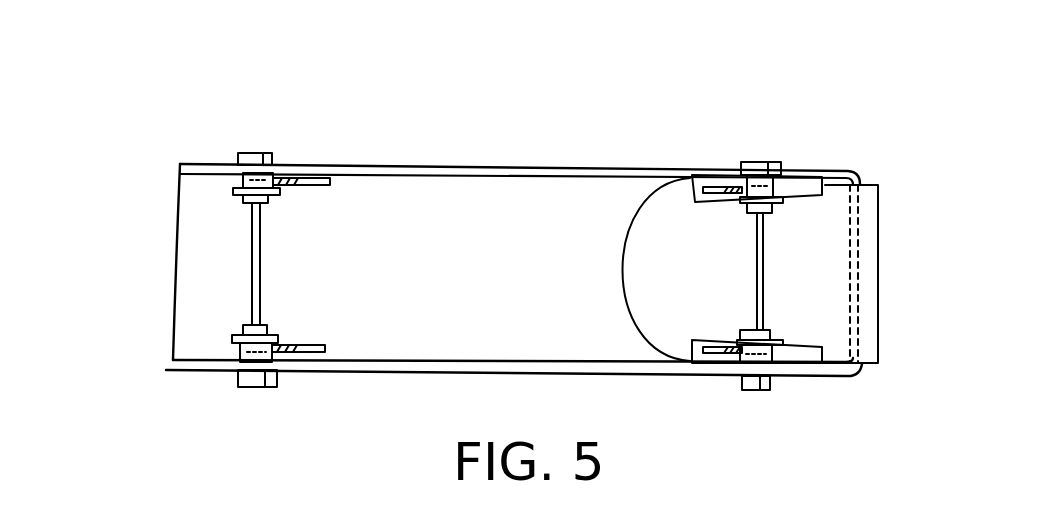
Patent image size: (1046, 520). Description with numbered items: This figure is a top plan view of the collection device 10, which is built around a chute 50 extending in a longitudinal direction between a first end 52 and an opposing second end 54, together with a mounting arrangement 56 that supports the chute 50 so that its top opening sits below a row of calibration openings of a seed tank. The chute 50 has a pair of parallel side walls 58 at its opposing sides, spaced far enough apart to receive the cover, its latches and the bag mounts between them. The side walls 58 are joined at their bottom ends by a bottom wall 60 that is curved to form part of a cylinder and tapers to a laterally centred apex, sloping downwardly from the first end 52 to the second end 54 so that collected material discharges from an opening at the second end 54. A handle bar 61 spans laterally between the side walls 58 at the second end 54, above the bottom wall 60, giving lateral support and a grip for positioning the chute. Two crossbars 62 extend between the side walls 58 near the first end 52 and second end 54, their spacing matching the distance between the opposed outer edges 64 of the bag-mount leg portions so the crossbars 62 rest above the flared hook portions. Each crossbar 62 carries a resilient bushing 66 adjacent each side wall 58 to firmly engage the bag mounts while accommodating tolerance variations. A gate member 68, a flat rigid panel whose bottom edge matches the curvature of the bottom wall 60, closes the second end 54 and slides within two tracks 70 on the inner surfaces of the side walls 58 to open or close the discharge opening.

The collection device 10 is at (86, 73).
The chute 50 is at (518, 130).
The first end 52 is at (175, 296).
The second end 54 is at (849, 162).
The mounting arrangement 56 is at (218, 340).
The side walls 58 is at (410, 170).
The bottom wall 60 is at (462, 282).
The handle bar 61 is at (862, 322).
The crossbars 62 is at (258, 252).
The outer edges 64 is at (275, 173).
The bushing 66 is at (242, 181).
The gate member 68 is at (833, 275).
The tracks 70 is at (802, 173).